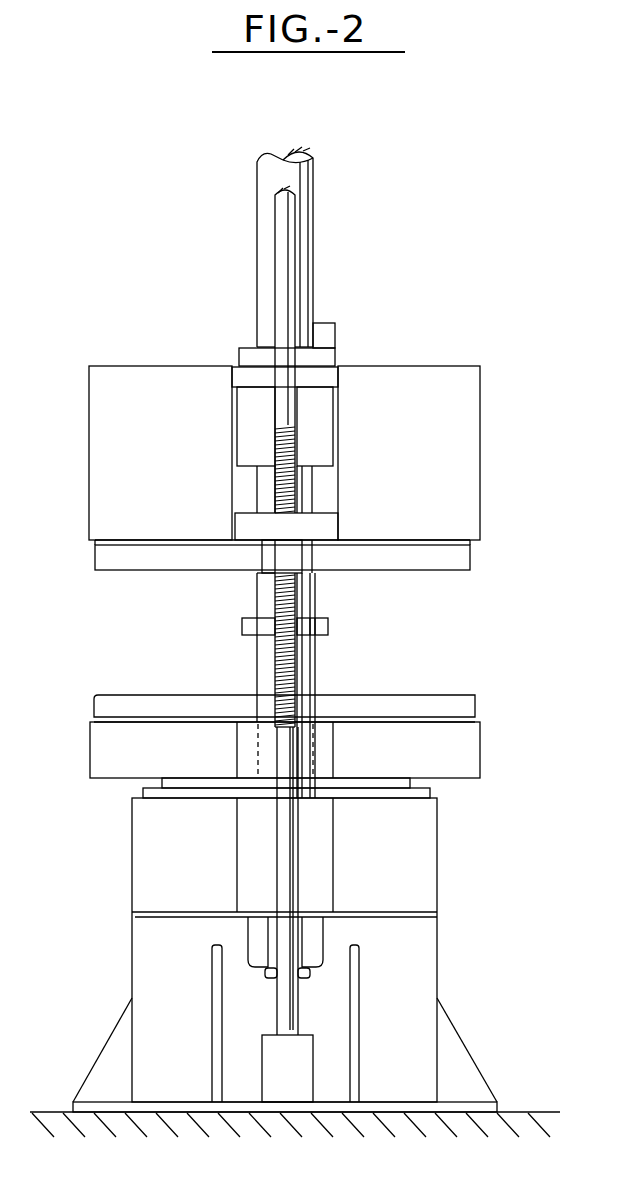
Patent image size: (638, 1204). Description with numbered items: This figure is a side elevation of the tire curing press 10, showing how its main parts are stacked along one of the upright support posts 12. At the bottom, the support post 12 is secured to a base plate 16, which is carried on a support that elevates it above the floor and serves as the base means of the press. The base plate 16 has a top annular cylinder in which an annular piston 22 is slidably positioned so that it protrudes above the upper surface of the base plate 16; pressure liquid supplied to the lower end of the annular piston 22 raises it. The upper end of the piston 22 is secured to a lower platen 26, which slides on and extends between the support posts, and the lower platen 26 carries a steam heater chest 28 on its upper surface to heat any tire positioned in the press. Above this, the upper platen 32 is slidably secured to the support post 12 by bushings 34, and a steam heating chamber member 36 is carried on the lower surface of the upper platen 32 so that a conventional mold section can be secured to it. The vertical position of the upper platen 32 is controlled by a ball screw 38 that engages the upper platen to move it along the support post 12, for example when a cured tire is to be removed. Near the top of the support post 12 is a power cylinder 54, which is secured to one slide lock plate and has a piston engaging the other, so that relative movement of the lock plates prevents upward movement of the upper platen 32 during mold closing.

The tire curing press 10 is at (162, 347).
The upright support post 12 is at (308, 209).
The base plate 16 is at (425, 855).
The annular piston 22 is at (410, 778).
The lower platen 26 is at (470, 752).
The steam heater chest 28 is at (476, 697).
The upper platen 32 is at (425, 366).
The bushing 34 is at (323, 441).
The steam heating chamber member 36 is at (428, 566).
The ball screw 38 is at (297, 661).
The power cylinder 54 is at (332, 333).